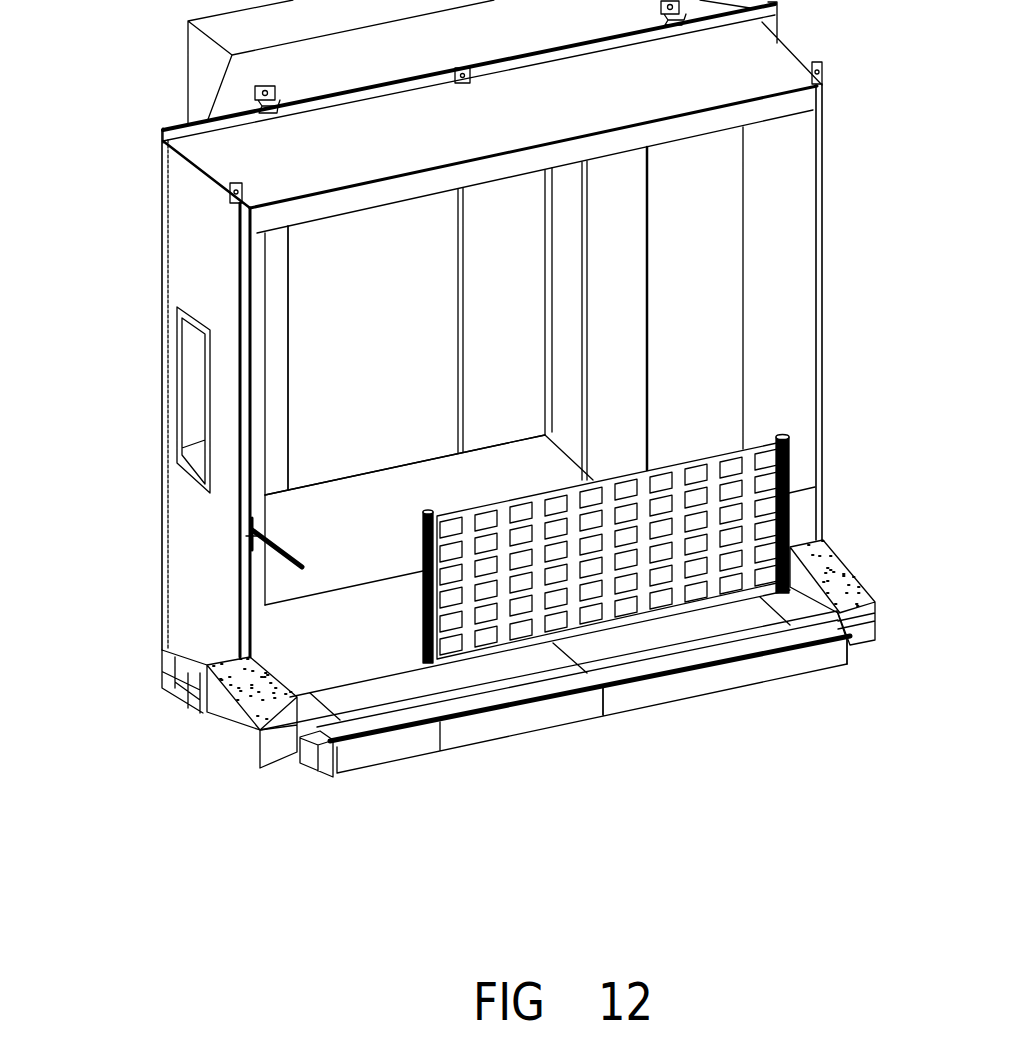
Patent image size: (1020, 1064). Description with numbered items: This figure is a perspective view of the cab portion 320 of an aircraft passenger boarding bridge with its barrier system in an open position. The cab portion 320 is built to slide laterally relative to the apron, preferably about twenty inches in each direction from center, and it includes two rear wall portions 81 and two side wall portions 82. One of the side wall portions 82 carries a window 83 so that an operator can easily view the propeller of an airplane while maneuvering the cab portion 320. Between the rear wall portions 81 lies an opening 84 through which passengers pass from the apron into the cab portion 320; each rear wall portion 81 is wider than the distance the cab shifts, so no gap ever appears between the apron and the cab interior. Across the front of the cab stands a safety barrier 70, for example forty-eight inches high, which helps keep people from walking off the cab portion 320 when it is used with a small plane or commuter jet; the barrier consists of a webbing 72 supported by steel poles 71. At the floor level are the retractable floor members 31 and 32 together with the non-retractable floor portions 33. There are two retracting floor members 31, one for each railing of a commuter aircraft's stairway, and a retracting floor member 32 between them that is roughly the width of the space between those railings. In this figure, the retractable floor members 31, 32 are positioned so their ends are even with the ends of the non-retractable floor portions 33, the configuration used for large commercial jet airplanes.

The cab portion 320 is at (155, 348).
The window 83 is at (193, 400).
The opening 84 is at (382, 268).
The rear wall portions 81 is at (277, 335).
The side wall portions 82 is at (617, 272).
The safety barrier 70 is at (637, 527).
The steel poles 71 is at (790, 493).
The webbing 72 is at (642, 577).
The non-retractable floor portions 33 is at (717, 680).
The retracting floor member 32 is at (397, 750).
The retracting floor members 31 is at (447, 742).